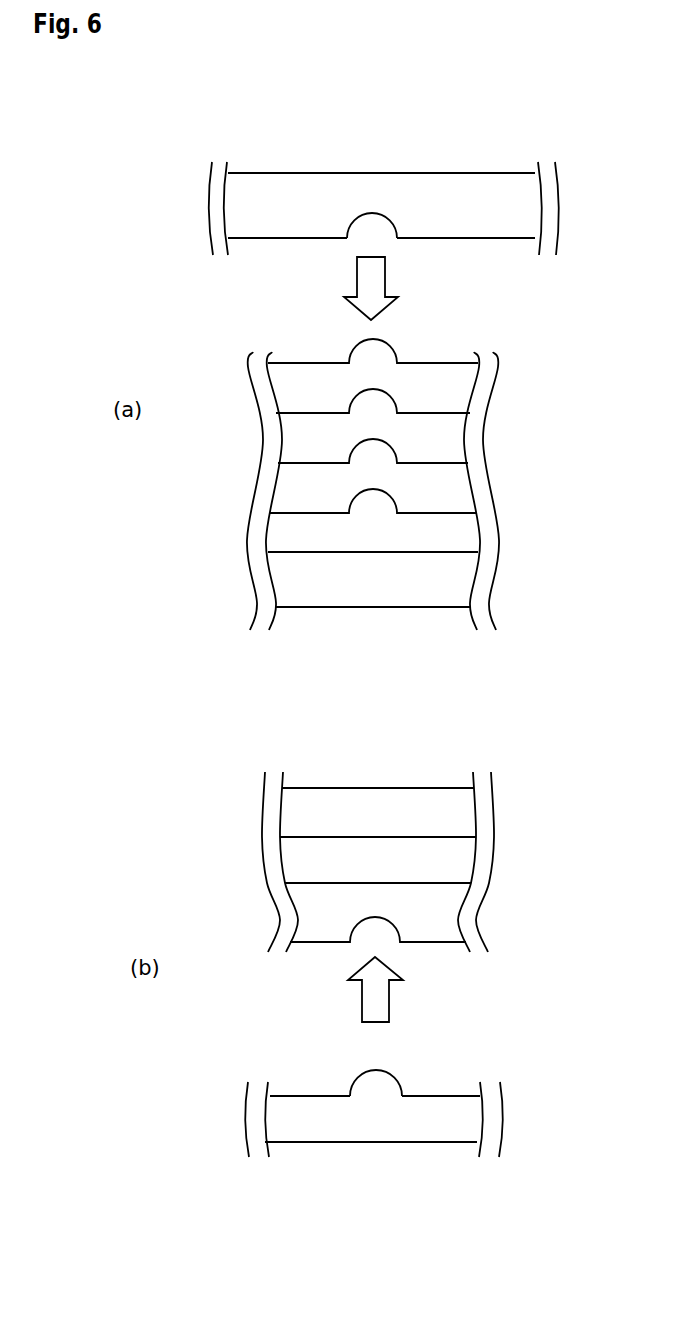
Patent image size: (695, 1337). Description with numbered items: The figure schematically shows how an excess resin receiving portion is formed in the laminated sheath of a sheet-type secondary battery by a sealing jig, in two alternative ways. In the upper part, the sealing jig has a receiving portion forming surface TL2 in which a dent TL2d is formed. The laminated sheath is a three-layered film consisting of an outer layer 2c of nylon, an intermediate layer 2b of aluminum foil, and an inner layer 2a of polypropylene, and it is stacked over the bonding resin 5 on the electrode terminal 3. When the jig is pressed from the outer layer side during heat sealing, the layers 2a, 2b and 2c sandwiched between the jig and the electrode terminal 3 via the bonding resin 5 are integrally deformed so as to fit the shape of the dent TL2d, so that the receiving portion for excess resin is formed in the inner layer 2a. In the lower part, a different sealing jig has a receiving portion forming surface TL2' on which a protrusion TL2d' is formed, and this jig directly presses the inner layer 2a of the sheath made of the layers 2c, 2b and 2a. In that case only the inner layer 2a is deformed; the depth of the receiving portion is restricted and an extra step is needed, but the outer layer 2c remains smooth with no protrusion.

The receiving portion forming surface TL2 is at (384, 177).
The dent TL2d is at (369, 181).
The outer layer 2c is at (387, 378).
The intermediate layer 2b is at (387, 428).
The inner layer 2a is at (387, 478).
The bonding resin 5 is at (387, 540).
The electrode terminal 3 is at (399, 594).
The protrusion TL2d' is at (413, 1059).
The receiving portion forming surface TL2' is at (374, 1149).